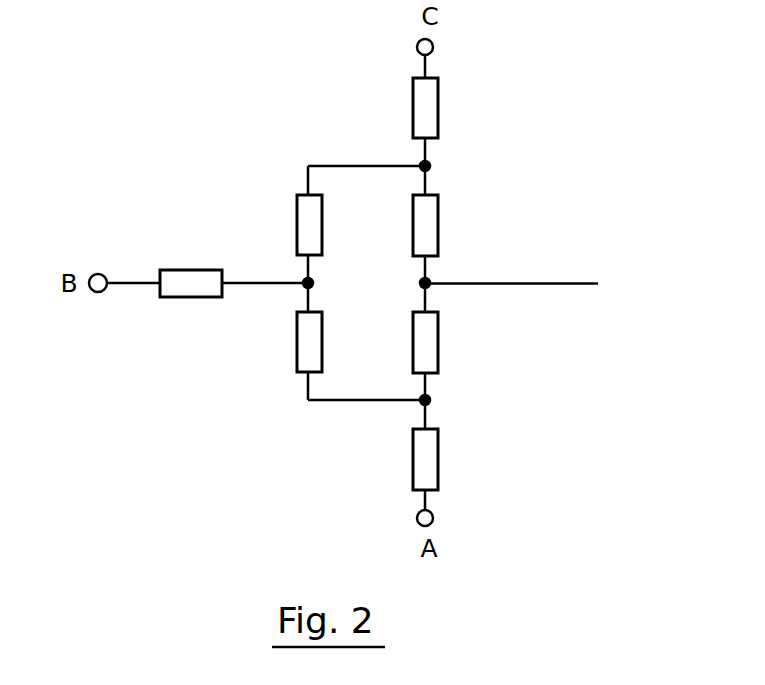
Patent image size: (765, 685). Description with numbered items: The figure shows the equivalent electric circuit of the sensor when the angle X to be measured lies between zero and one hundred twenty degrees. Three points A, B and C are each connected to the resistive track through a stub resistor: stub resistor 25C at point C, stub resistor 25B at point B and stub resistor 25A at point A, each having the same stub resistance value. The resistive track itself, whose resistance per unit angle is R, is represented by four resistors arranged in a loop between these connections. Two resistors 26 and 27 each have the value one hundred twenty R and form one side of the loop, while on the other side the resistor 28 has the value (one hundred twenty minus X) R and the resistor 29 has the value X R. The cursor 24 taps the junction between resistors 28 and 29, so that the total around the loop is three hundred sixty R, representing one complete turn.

The cursor 24 is at (553, 284).
The stub resistor 25A is at (420, 462).
The stub resistor 25B is at (183, 288).
The stub resistor 25C is at (420, 111).
The 120 R resistor 26 is at (297, 372).
The 120 R resistor 27 is at (297, 195).
The (120−X) R resistor 28 is at (438, 210).
The X R resistor 29 is at (438, 358).